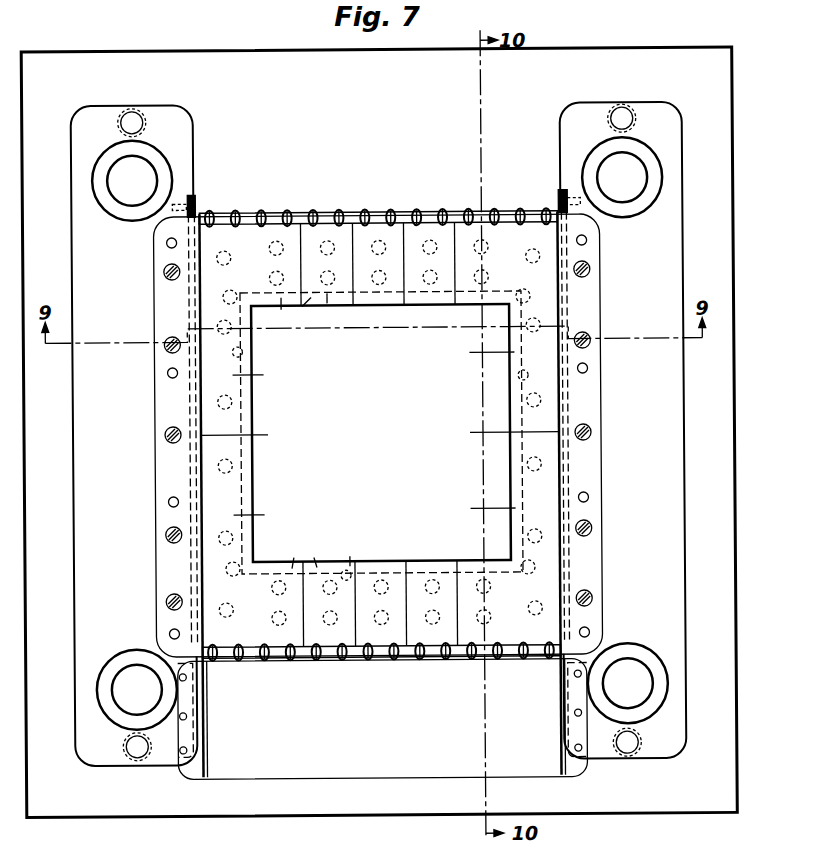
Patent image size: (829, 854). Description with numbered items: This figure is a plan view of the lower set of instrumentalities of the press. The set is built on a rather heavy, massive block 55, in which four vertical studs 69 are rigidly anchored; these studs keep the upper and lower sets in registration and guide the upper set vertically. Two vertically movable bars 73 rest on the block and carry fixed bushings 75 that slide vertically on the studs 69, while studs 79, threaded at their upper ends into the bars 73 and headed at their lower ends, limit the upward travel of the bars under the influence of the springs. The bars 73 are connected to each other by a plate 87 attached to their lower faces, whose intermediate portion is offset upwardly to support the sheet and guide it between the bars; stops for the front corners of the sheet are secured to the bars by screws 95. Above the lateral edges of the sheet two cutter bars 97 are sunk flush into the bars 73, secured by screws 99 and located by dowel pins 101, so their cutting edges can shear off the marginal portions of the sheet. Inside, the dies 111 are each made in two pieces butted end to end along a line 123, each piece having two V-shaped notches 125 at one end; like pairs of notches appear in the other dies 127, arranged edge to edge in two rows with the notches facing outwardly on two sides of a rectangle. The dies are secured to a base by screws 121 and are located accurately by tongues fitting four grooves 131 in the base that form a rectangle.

The block 55 is at (727, 586).
The vertical studs 69 is at (112, 178).
The vertically movable bars 73 is at (73, 442).
The bushings 75 is at (163, 175).
The studs 79 is at (133, 107).
The plate 87 is at (403, 768).
The screws 95 is at (198, 206).
The cutter bars 97 is at (155, 414).
The screws 99 is at (164, 270).
The dowel pins 101 is at (167, 242).
The dies 111 is at (373, 433).
The screws 121 is at (430, 285).
The line 123 is at (380, 433).
The notches 125 is at (289, 209).
The dies 127 is at (294, 432).
The grooves 131 is at (518, 376).